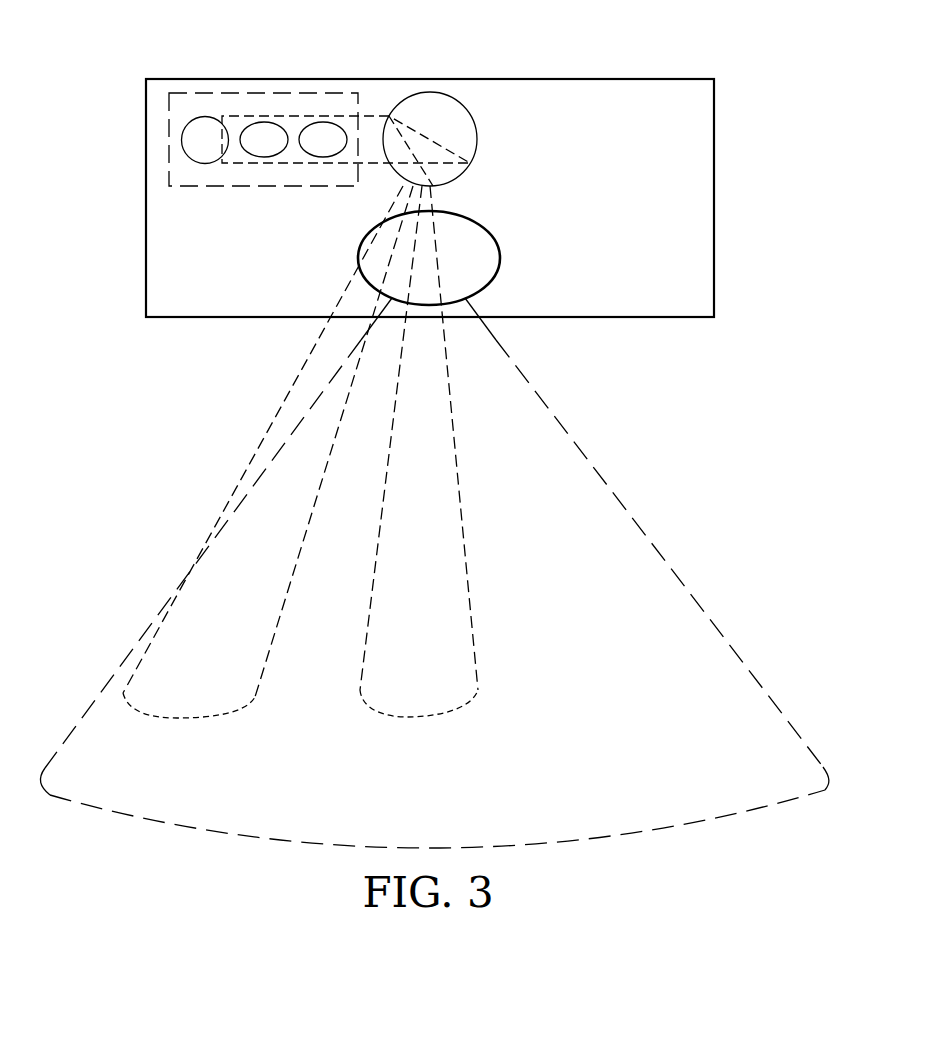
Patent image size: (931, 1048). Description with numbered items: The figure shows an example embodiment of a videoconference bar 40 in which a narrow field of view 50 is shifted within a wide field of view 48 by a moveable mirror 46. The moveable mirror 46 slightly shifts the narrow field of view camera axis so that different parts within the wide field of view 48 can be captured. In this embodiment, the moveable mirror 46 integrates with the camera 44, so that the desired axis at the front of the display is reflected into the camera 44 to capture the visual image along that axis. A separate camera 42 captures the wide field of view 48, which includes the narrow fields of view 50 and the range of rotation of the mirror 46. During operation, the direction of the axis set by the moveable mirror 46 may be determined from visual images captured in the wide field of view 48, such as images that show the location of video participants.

The videoconference bar 40 is at (582, 80).
The camera 42 is at (500, 257).
The camera 44 is at (264, 92).
The moveable mirror 46 is at (441, 92).
The wide field of view 48 is at (560, 848).
The narrow field of view 50 is at (185, 718).